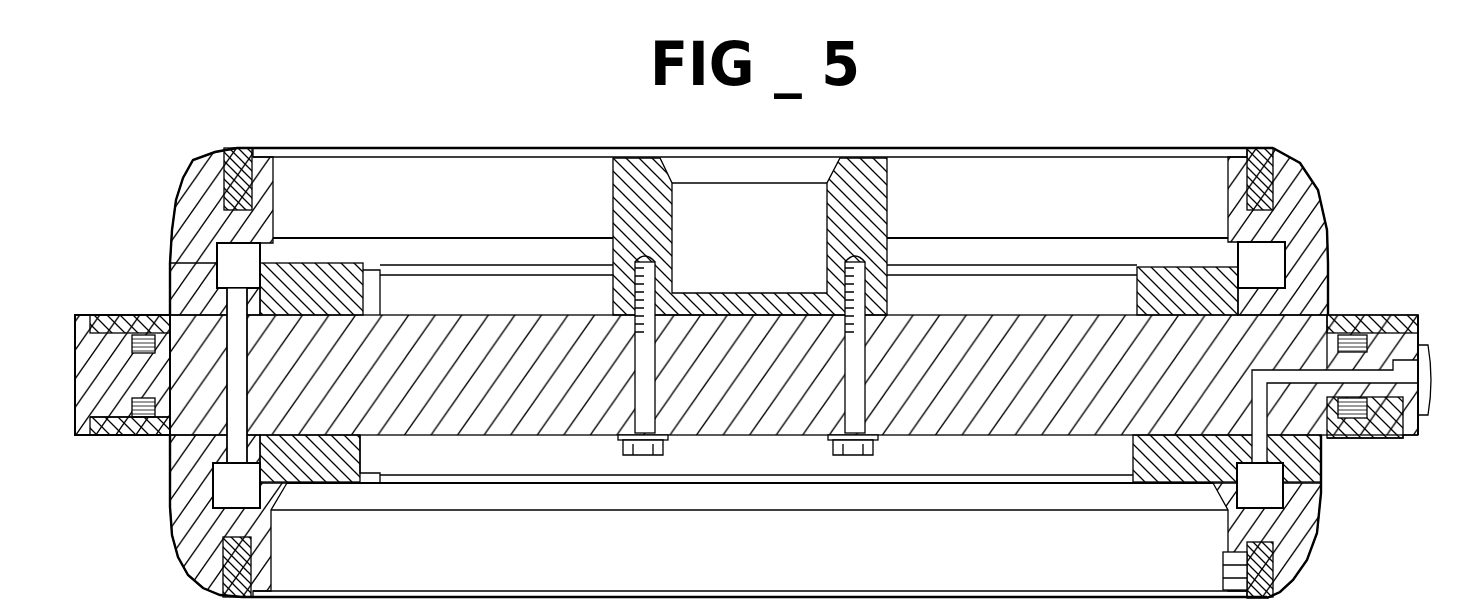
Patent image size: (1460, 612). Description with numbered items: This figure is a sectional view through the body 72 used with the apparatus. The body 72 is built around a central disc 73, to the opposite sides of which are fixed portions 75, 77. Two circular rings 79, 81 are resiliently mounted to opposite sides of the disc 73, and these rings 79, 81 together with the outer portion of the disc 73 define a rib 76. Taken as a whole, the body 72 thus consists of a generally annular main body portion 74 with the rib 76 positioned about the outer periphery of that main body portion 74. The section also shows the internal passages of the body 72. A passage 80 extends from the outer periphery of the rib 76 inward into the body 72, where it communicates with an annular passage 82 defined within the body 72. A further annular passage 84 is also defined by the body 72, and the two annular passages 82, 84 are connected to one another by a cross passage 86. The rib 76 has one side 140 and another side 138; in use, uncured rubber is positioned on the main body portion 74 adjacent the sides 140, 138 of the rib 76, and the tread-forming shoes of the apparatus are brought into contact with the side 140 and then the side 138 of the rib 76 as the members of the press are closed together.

The body 72 is at (1338, 218).
The disc 73 is at (507, 398).
The generally annular main body portion 74 is at (1310, 177).
The portion 75 is at (317, 287).
The rib 76 is at (1388, 440).
The portion 77 is at (330, 473).
The circular ring 79 is at (132, 323).
The passage 80 is at (1330, 363).
The circular ring 81 is at (112, 427).
The annular passage 82 is at (193, 562).
The annular passage 84 is at (260, 262).
The cross passage 86 is at (198, 483).
The side of the rib 138 is at (107, 315).
The side of the rib 140 is at (132, 437).